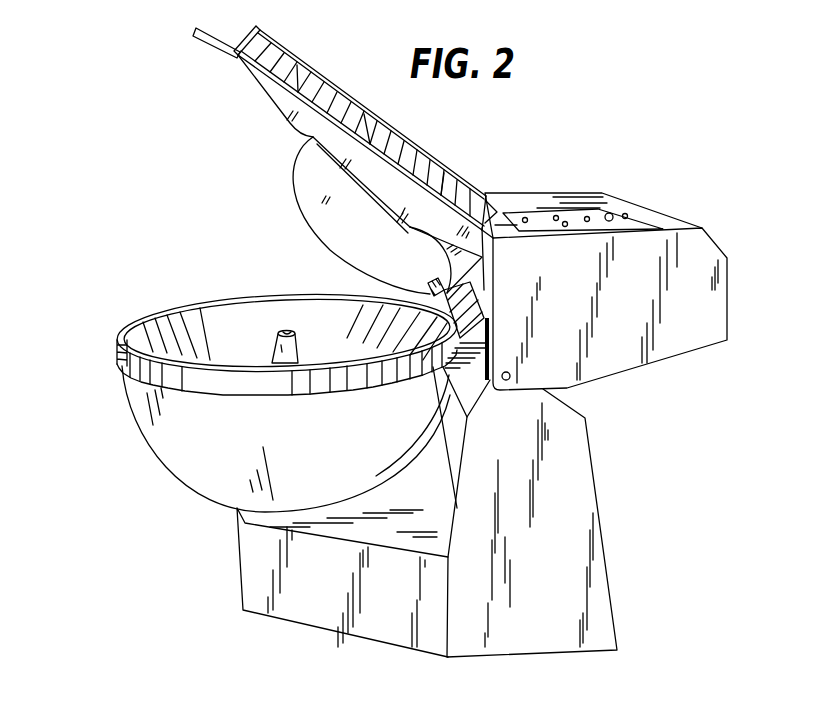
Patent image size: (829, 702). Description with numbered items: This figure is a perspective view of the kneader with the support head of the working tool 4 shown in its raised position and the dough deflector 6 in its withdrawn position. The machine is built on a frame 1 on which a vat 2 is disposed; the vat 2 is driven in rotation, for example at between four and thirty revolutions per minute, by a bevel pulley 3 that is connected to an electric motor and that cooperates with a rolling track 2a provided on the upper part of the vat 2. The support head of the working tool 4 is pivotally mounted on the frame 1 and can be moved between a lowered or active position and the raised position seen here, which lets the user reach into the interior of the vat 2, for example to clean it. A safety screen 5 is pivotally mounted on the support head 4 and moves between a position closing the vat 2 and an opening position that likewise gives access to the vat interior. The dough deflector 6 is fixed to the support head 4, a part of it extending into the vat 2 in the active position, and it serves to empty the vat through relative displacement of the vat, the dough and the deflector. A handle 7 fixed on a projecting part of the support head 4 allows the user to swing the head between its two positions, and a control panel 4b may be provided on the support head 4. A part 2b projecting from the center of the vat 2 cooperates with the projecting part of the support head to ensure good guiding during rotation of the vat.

The frame 1 is at (607, 558).
The vat 2 is at (206, 503).
The rolling track 2a is at (118, 356).
The projecting part 2b is at (287, 330).
The bevel pulley 3 is at (474, 318).
The support head of the working tool 4 is at (731, 324).
The control panel 4b is at (630, 222).
The safety screen 5 is at (340, 86).
The dough deflector 6 is at (329, 215).
The handle 7 is at (228, 44).